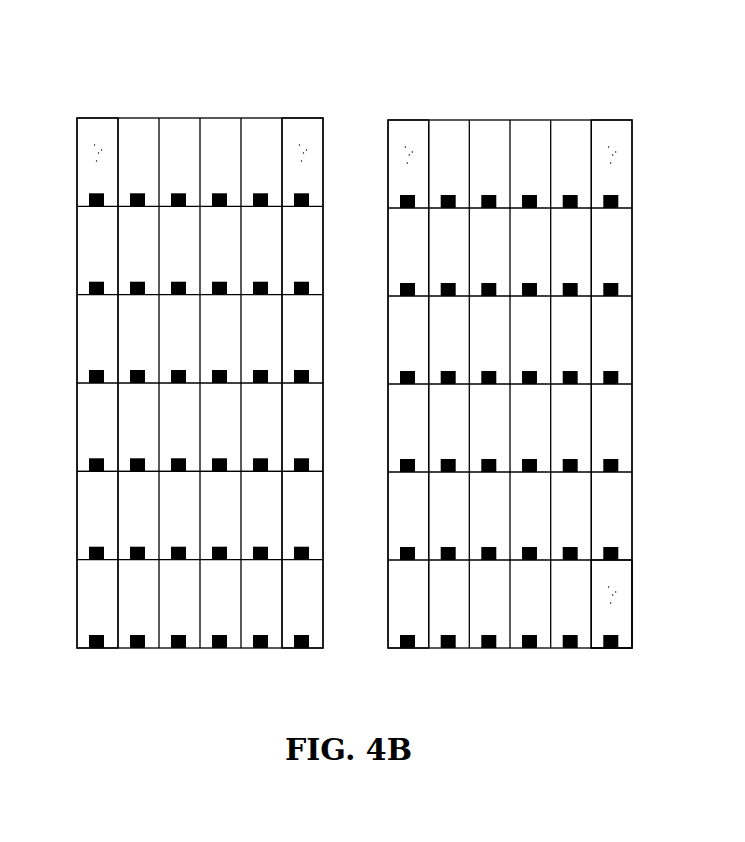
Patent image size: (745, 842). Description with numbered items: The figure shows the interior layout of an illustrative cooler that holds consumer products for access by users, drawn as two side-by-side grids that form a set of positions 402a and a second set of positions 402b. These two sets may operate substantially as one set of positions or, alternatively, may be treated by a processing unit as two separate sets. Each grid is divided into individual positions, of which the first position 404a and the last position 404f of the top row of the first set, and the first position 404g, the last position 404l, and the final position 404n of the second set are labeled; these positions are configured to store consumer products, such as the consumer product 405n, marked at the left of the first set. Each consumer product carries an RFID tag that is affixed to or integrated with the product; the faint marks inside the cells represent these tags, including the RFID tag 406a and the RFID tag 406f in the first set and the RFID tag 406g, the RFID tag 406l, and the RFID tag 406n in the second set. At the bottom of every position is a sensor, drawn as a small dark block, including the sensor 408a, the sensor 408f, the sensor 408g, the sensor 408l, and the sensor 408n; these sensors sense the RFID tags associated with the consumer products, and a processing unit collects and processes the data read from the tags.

The set of positions 402a is at (188, 118).
The set of positions 402b is at (500, 120).
The individual position 404a is at (82, 118).
The individual position 404f is at (311, 118).
The individual position 404g is at (401, 120).
The individual position 404l is at (627, 122).
The individual position 404n is at (615, 570).
The consumer product 405n is at (60, 466).
The RFID tag 406a is at (97, 165).
The RFID tag 406f is at (315, 165).
The RFID tag 406g is at (410, 155).
The RFID tag 406l is at (620, 165).
The RFID tag 406n is at (615, 605).
The sensor 408a is at (95, 205).
The sensor 408f is at (323, 200).
The sensor 408g is at (398, 197).
The sensor 408l is at (632, 202).
The sensor 408n is at (620, 646).